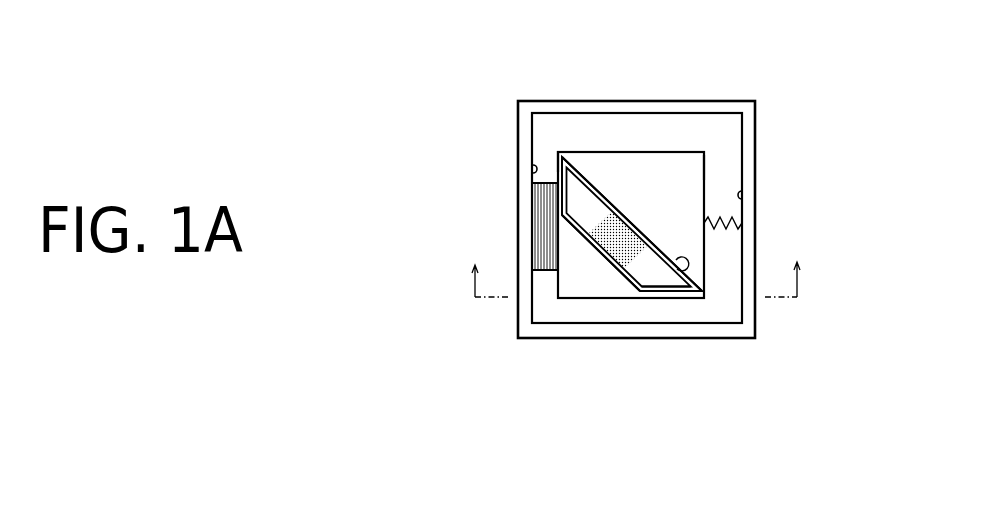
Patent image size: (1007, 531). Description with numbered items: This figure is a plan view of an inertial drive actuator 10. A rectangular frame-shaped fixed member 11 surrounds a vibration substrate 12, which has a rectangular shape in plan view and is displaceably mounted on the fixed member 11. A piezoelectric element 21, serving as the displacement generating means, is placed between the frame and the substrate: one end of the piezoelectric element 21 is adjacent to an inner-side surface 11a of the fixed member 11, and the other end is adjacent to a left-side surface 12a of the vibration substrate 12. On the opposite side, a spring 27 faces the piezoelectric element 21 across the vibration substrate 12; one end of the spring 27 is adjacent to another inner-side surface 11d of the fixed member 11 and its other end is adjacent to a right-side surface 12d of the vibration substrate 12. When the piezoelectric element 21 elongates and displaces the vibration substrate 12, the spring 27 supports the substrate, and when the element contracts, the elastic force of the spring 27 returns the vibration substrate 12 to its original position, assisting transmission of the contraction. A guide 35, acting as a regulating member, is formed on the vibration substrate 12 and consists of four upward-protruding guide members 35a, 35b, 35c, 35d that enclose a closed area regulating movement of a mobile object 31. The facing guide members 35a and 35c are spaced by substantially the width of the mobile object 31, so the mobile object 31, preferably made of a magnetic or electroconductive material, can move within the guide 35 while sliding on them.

The inertial drive actuator 10 is at (660, 481).
The fixed member 11 is at (525, 132).
The inner-side surface 11a is at (533, 165).
The inner-side surface 11d is at (742, 191).
The vibration substrate 12 is at (573, 280).
The left-side surface 12a is at (558, 153).
The right-side surface 12d is at (704, 165).
The piezoelectric element 21 is at (543, 232).
The spring 27 is at (740, 222).
The mobile object 31 is at (627, 242).
The guide 35 is at (701, 217).
The guide member 35a is at (623, 288).
The guide member 35b is at (587, 162).
The guide member 35c is at (687, 290).
The guide member 35d is at (658, 297).